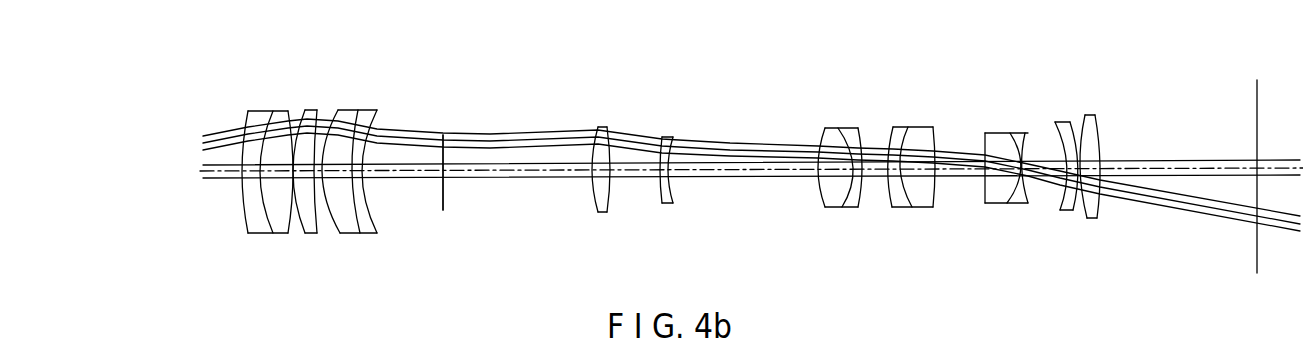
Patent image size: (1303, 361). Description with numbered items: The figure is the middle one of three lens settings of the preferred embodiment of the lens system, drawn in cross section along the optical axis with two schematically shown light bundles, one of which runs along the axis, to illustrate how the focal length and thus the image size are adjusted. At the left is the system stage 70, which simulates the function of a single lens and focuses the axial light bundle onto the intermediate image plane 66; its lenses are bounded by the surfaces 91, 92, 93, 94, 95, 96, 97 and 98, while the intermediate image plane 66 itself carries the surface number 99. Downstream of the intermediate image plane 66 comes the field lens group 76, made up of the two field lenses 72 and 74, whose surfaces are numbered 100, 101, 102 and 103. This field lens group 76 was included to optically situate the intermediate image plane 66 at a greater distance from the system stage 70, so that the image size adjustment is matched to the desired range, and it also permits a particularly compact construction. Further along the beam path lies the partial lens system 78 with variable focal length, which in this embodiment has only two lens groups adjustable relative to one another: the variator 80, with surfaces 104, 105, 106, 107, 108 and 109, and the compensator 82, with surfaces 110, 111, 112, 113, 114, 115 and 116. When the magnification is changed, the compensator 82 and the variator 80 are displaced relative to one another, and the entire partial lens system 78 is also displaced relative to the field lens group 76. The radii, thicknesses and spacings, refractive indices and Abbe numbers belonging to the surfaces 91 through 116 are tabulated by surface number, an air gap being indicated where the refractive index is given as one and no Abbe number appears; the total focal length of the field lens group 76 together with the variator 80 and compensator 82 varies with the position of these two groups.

The intermediate image plane 66 is at (443, 138).
The system stage 70 is at (245, 98).
The field lens 72 is at (580, 175).
The field lens 74 is at (673, 174).
The field lens group 76 is at (677, 103).
The partial lens system 78 is at (1100, 48).
The variator 80 is at (810, 108).
The compensator 82 is at (1100, 108).
The lens surface 91 is at (247, 227).
The lens surface 92 is at (275, 232).
The lens surface 93 is at (288, 232).
The lens surface 94 is at (296, 233).
The lens surface 95 is at (320, 233).
The lens surface 96 is at (342, 232).
The lens surface 97 is at (358, 233).
The lens surface 98 is at (376, 208).
The lens surface 99 is at (443, 207).
The lens surface 100 is at (594, 204).
The lens surface 101 is at (606, 213).
The lens surface 102 is at (662, 204).
The lens surface 103 is at (672, 204).
The lens surface 104 is at (821, 199).
The lens surface 105 is at (841, 204).
The lens surface 106 is at (861, 208).
The lens surface 107 is at (889, 199).
The lens surface 108 is at (916, 208).
The lens surface 109 is at (934, 206).
The lens surface 110 is at (985, 204).
The lens surface 111 is at (1005, 204).
The lens surface 112 is at (1028, 204).
The lens surface 113 is at (1052, 199).
The lens surface 114 is at (1073, 212).
The lens surface 115 is at (1090, 220).
The lens surface 116 is at (1098, 218).